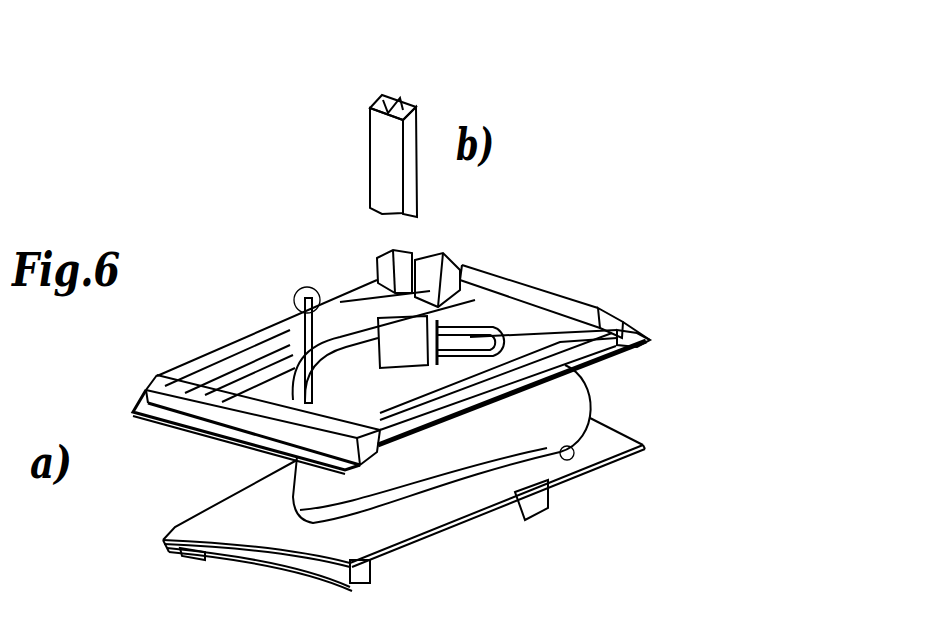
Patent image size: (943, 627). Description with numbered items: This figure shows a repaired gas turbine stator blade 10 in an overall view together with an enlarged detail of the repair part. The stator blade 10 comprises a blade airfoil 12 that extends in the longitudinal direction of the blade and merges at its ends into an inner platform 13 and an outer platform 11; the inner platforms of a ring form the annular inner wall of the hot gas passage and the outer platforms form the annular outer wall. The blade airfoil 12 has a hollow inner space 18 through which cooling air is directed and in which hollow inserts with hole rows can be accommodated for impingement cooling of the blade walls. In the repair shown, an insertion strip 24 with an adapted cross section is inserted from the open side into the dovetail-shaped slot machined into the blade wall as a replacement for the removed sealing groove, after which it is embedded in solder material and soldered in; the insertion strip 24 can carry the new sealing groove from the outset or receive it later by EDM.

The stator blade 10 is at (606, 534).
The outer platform 11 is at (642, 334).
The blade airfoil 12 is at (565, 403).
The inner platform 13 is at (643, 445).
The inner space 18 is at (457, 341).
The insertion strip 24 is at (342, 115).